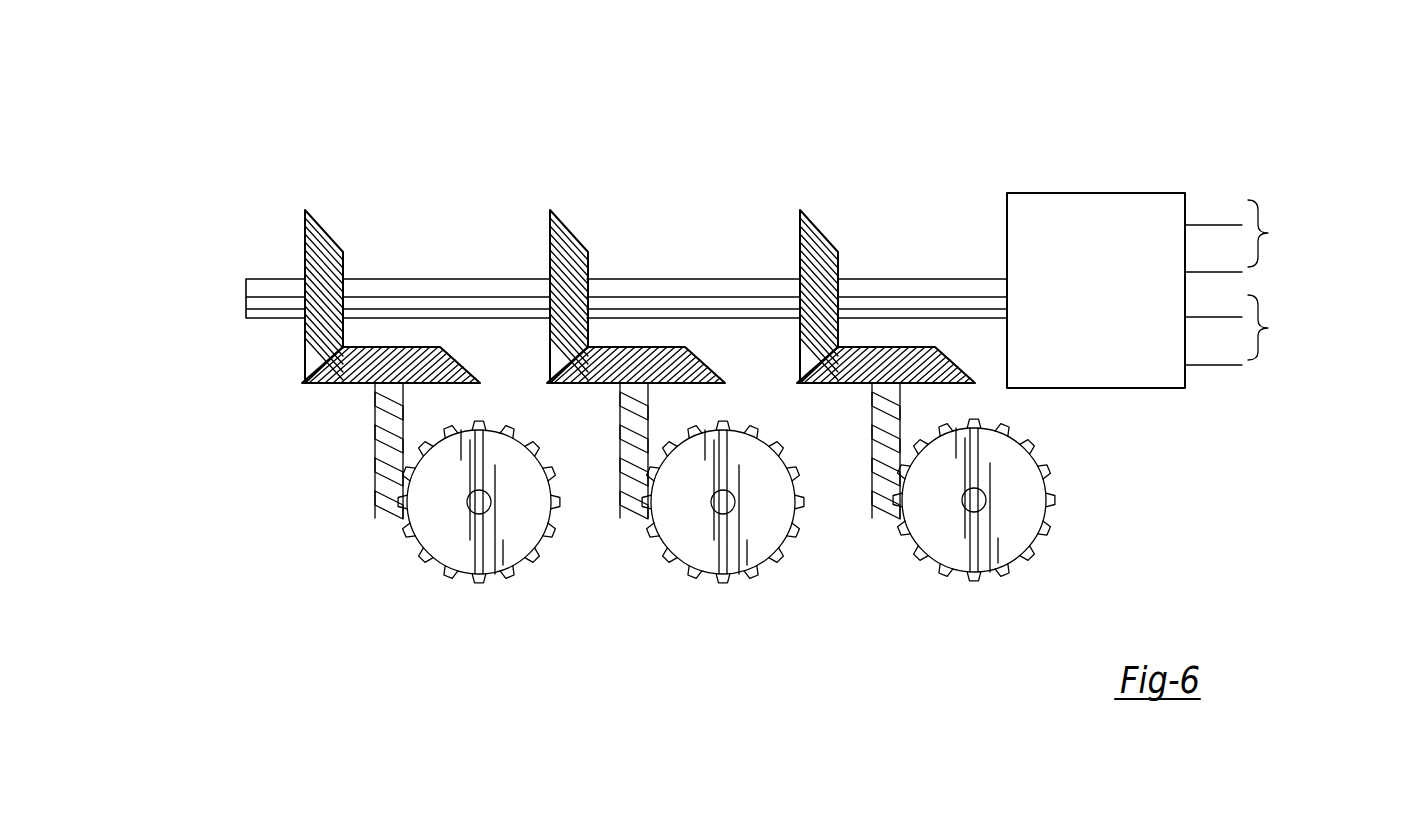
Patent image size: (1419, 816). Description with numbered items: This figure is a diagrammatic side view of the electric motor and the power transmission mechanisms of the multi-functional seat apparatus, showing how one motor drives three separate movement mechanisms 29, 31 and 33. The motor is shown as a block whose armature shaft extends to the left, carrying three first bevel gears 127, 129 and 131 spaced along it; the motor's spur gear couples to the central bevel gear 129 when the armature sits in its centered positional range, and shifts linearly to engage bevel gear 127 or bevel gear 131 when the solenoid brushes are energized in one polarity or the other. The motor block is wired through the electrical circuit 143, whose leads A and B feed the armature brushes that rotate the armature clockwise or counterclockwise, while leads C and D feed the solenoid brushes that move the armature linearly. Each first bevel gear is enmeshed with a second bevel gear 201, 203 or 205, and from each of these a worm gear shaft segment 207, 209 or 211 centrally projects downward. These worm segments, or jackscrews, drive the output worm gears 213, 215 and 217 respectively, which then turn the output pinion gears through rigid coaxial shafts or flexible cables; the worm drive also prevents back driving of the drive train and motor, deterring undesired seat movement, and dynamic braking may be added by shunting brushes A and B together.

The movement mechanism 29 is at (696, 546).
The movement mechanism 31 is at (414, 539).
The movement mechanism 33 is at (1017, 531).
The first bevel gear 127 is at (822, 238).
The central bevel gear 129 is at (560, 237).
The first bevel gear 131 is at (325, 237).
The electrical circuit 143 is at (1193, 165).
The second bevel gear 201 is at (862, 365).
The second bevel gear 203 is at (592, 372).
The second bevel gear 205 is at (345, 378).
The worm gear shaft segment 207 is at (878, 518).
The worm gear shaft segment 209 is at (632, 520).
The worm gear shaft segment 211 is at (385, 520).
The output worm gear 213 is at (1032, 485).
The output worm gear 215 is at (750, 548).
The output worm gear 217 is at (492, 556).